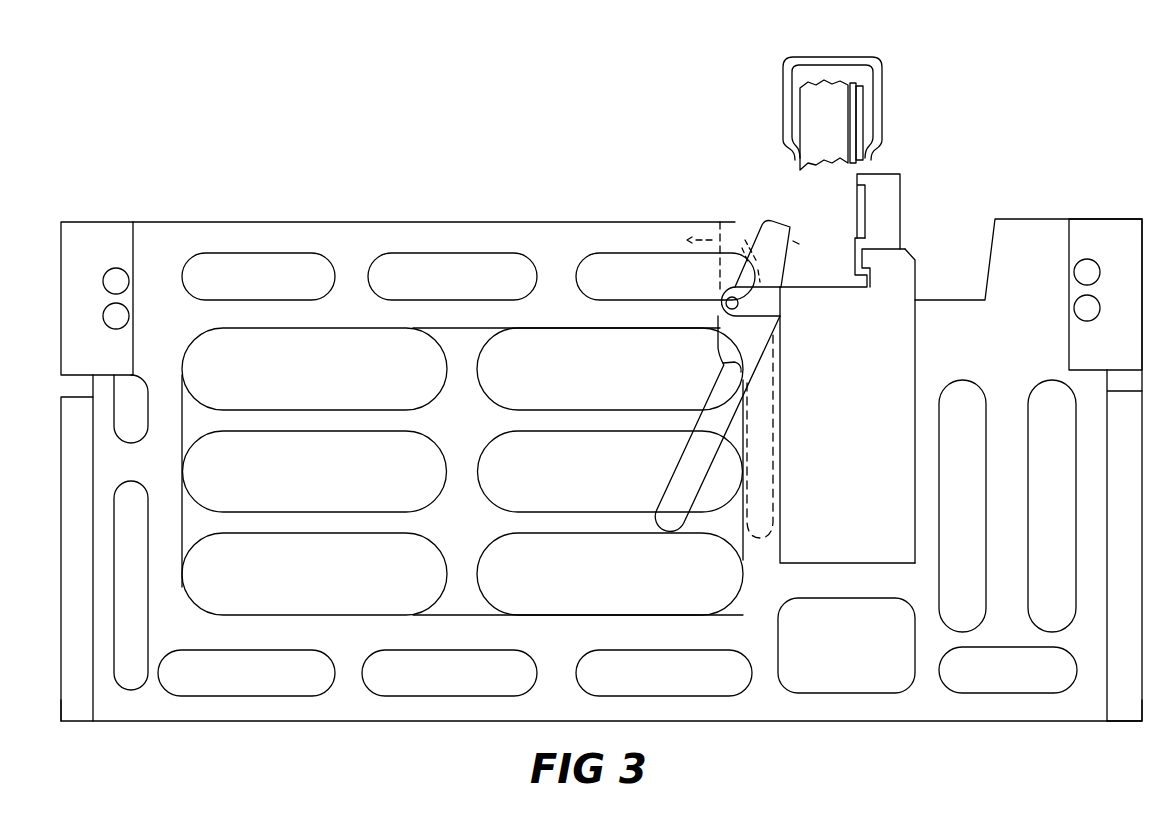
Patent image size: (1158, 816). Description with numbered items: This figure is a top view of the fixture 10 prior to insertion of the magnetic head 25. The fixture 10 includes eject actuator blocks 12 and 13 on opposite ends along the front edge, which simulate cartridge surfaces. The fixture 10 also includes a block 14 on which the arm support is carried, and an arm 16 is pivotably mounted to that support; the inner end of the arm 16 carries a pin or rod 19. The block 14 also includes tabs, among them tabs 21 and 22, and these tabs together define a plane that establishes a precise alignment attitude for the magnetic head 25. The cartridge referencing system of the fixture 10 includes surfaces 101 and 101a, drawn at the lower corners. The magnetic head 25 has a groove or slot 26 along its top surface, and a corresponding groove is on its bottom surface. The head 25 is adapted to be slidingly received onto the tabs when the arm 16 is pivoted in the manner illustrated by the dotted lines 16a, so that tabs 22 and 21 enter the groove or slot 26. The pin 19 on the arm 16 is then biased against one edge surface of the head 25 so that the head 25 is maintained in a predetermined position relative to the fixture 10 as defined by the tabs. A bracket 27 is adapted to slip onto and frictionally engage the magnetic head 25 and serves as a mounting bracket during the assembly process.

The fixture 10 is at (278, 195).
The eject actuator block 12 is at (1127, 222).
The eject actuator block 13 is at (92, 245).
The block 14 is at (850, 518).
The arm 16 is at (672, 462).
The dotted lines 16a is at (718, 272).
The pin or rod 19 is at (757, 228).
The tab 21 is at (855, 260).
The tab 22 is at (857, 182).
The magnetic head 25 is at (822, 97).
The groove or slot 26 is at (850, 147).
The bracket 27 is at (877, 57).
The surface 101 is at (70, 710).
The surface 101a is at (1125, 707).